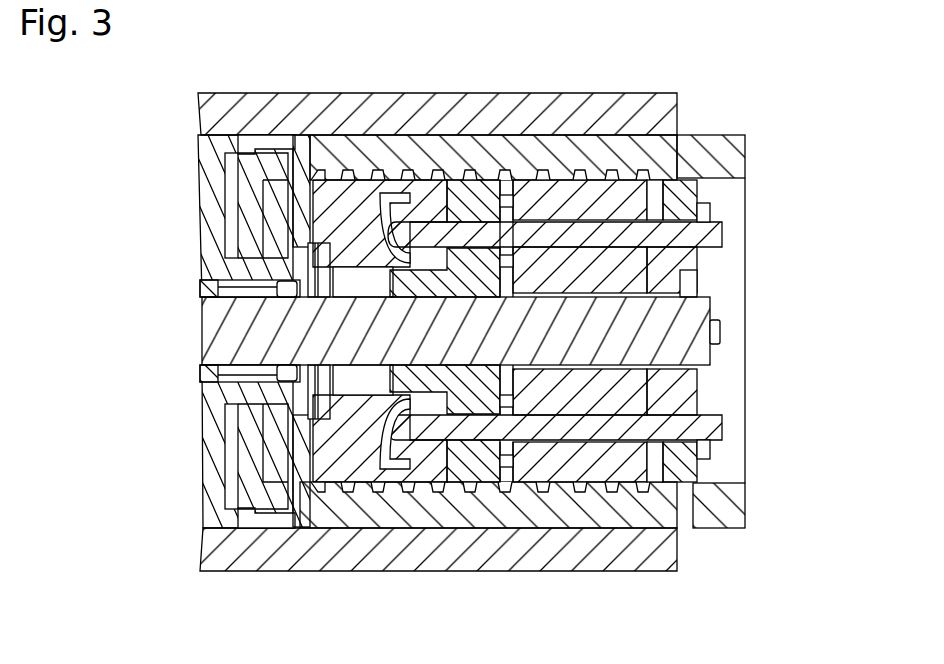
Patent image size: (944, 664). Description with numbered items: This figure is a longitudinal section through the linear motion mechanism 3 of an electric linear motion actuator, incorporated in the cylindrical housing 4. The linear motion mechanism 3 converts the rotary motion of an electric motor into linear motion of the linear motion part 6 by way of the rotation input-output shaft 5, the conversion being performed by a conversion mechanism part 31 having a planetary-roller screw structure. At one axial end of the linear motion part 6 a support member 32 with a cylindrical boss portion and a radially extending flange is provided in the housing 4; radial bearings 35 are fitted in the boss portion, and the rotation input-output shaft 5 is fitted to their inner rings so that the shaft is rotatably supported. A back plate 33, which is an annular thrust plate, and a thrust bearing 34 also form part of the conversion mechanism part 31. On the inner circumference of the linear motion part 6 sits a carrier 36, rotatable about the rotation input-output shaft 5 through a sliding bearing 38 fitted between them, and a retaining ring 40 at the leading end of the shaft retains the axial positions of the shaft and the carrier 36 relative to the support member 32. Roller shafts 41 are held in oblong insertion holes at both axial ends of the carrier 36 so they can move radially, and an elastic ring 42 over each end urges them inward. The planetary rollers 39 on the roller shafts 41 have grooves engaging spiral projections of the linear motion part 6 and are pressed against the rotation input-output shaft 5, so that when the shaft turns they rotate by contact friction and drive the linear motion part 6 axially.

The linear motion mechanism 3 is at (712, 152).
The housing 4 is at (398, 110).
The rotation input-output shaft 5 is at (215, 331).
The linear motion part 6 is at (488, 135).
The conversion mechanism part 31 is at (573, 122).
The support member 32 is at (215, 218).
The back plate 33 is at (342, 460).
The thrust bearing 34 is at (308, 200).
The radial bearings 35 is at (283, 378).
The carrier 36 is at (712, 212).
The sliding bearing 38 is at (690, 298).
The planetary rollers 39 is at (625, 175).
The retaining ring 40 is at (708, 374).
The roller shafts 41 is at (700, 233).
The elastic ring 42 is at (708, 456).